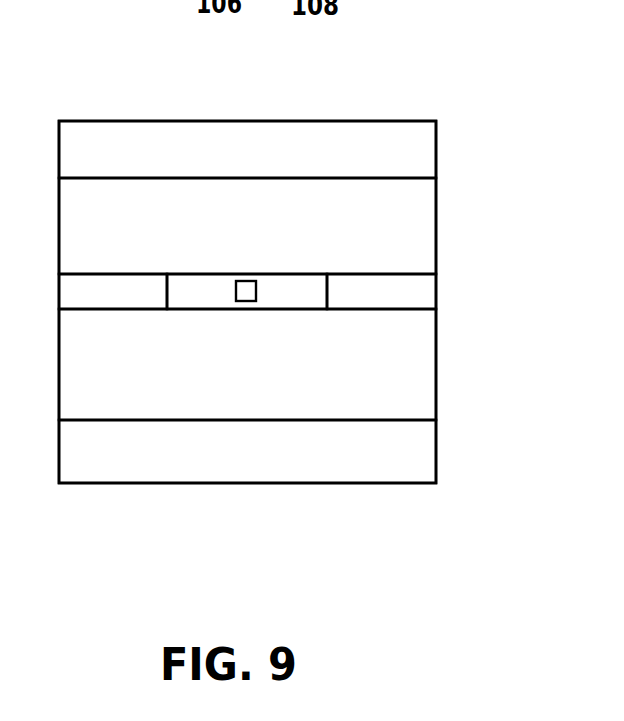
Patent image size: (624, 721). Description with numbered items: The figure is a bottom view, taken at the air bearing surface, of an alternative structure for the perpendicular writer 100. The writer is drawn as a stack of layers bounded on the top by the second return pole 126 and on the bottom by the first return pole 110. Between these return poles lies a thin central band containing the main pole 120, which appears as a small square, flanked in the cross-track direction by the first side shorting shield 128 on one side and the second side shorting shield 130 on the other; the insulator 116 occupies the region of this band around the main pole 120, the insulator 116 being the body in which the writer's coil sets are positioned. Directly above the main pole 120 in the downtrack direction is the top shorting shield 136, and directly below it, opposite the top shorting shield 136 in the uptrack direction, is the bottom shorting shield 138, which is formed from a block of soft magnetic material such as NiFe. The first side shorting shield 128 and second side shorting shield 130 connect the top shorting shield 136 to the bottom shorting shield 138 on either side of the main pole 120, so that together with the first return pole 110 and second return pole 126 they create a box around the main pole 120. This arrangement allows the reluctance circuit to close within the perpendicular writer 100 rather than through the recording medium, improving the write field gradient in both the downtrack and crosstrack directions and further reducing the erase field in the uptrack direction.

The perpendicular writer 100 is at (440, 93).
The first return pole 110 is at (400, 451).
The insulator 116 is at (208, 300).
The main pole 120 is at (246, 291).
The second return pole 126 is at (400, 144).
The first side shorting shield 128 is at (95, 297).
The second side shorting shield 130 is at (358, 300).
The top shorting shield 136 is at (363, 240).
The bottom shorting shield 138 is at (392, 392).